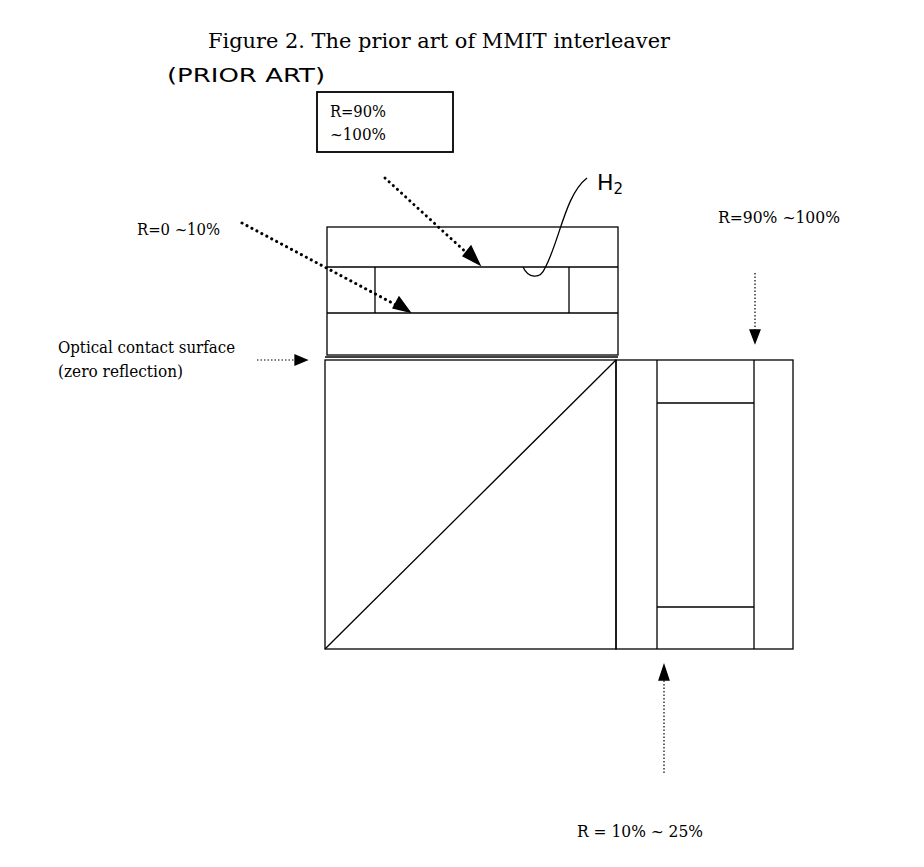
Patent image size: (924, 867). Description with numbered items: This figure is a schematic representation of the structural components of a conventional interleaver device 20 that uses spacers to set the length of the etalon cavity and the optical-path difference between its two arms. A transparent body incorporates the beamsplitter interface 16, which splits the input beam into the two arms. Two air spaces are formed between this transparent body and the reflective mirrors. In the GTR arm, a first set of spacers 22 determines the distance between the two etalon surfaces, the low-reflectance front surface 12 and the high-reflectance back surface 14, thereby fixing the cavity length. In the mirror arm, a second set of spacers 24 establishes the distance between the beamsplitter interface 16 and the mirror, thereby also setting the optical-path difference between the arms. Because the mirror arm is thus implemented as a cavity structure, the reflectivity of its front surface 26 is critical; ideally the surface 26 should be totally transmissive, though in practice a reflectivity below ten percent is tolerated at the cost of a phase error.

The front surface 12 is at (657, 593).
The back surface 14 is at (754, 476).
The beamsplitter interface 16 is at (407, 567).
The interleaver device 20 is at (693, 172).
The first set of spacers 22 is at (683, 360).
The second set of spacers 24 is at (618, 290).
The front surface 26 is at (465, 313).